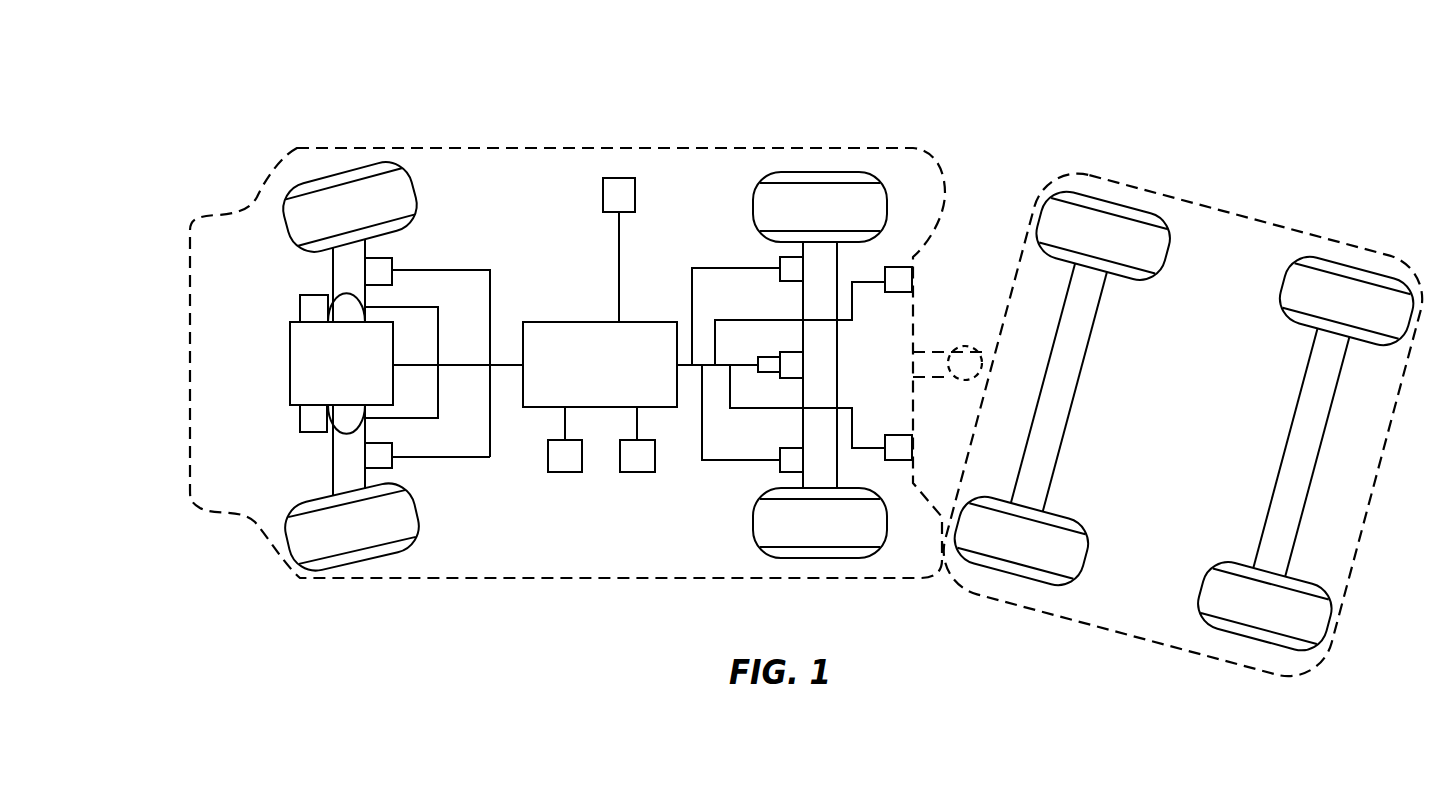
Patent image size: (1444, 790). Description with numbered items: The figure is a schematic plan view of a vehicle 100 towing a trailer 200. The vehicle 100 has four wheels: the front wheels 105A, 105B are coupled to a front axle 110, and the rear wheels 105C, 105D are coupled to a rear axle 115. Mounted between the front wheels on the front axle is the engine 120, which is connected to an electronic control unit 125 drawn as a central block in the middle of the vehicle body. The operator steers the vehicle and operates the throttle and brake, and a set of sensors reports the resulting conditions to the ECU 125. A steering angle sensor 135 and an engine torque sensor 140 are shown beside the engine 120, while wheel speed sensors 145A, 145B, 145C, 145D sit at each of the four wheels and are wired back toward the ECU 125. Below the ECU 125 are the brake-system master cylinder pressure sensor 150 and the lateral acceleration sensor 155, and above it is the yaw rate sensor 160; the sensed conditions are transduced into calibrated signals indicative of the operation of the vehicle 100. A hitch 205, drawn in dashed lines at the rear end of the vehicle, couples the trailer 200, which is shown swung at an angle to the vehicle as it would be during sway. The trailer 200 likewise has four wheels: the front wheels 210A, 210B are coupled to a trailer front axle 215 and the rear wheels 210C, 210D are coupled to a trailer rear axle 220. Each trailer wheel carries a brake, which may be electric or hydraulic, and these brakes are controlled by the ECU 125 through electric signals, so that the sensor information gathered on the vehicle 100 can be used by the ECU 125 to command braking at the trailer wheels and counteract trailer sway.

The vehicle 100 is at (660, 147).
The front wheel 105A is at (353, 202).
The front wheel 105B is at (352, 532).
The rear wheel 105C is at (828, 200).
The rear wheel 105D is at (822, 523).
The front axle 110 is at (348, 457).
The rear axle 115 is at (822, 368).
The engine 120 is at (289, 360).
The electronic control unit 125 is at (577, 320).
The steering angle sensor 135 is at (299, 302).
The engine torque sensor 140 is at (299, 418).
The wheel speed sensor 145A is at (391, 258).
The wheel speed sensor 145B is at (391, 463).
The wheel speed sensor 145C is at (778, 258).
The wheel speed sensor 145D is at (778, 468).
The brake-system master cylinder pressure sensor 150 is at (562, 472).
The lateral acceleration sensor 155 is at (637, 472).
The yaw rate sensor 160 is at (608, 177).
The trailer 200 is at (1258, 222).
The hitch 205 is at (955, 358).
The trailer front wheel 210A is at (1112, 238).
The trailer front wheel 210B is at (1010, 543).
The trailer rear wheel 210C is at (1342, 302).
The trailer rear wheel 210D is at (1257, 605).
The trailer front axle 215 is at (1060, 385).
The trailer rear axle 220 is at (1312, 442).